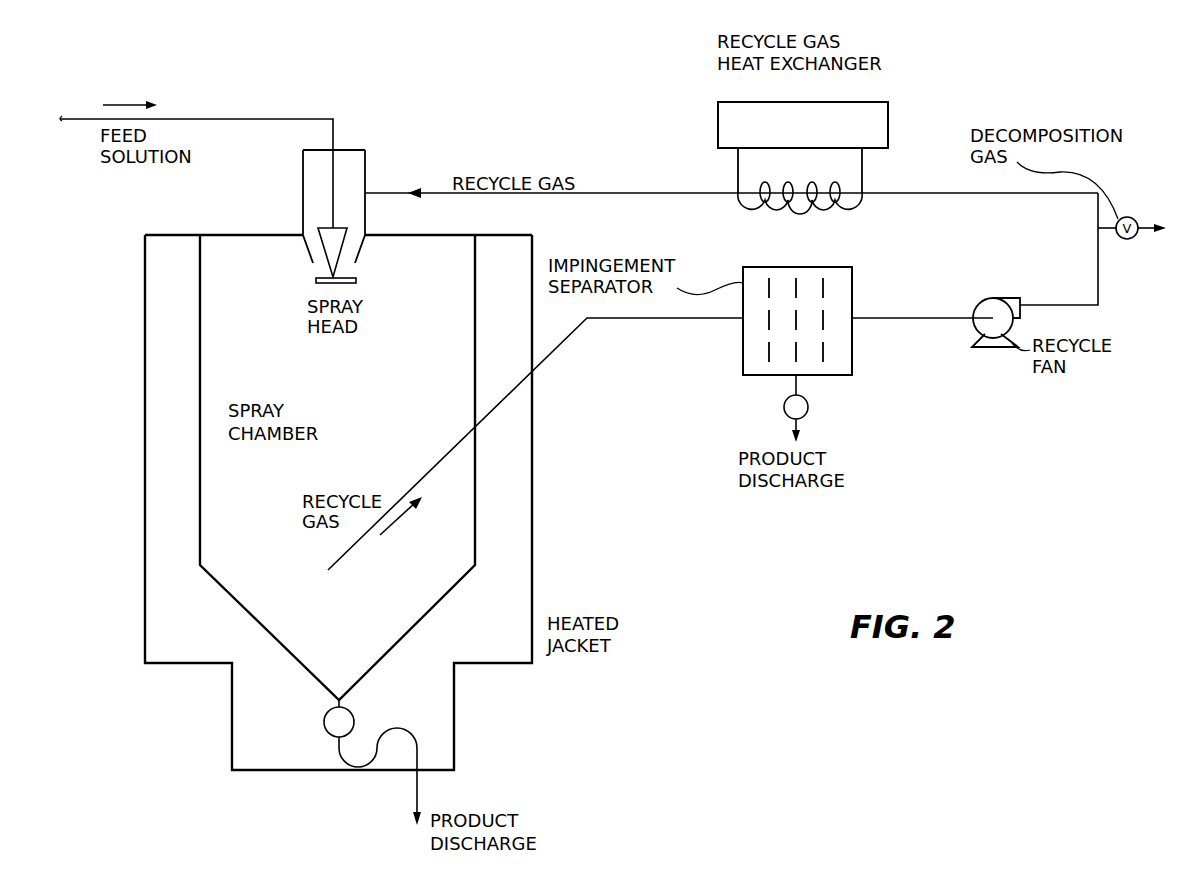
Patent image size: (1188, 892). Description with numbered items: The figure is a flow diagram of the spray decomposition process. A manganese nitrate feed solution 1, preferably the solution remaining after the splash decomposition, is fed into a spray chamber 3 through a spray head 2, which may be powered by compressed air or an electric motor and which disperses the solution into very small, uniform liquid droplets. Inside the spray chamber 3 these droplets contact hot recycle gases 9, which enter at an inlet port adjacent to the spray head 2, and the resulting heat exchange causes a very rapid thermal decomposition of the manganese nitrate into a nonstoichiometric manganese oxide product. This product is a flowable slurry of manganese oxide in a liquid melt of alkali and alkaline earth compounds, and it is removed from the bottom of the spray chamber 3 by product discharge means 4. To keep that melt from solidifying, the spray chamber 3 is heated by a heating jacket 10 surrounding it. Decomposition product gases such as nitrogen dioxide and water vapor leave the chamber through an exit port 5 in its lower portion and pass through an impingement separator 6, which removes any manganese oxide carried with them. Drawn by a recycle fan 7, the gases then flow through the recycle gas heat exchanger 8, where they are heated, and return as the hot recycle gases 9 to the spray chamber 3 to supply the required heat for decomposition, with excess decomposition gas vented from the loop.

The feed solution line 1 is at (213, 119).
The spray head 2 is at (313, 284).
The spray chamber 3 is at (363, 444).
The product discharge means 4 is at (418, 756).
The exit port 5 is at (373, 528).
The impingement separator 6 is at (852, 312).
The recycle fan 7 is at (978, 311).
The recycle gas heat exchanger 8 is at (788, 118).
The recycle gases 9 is at (619, 193).
The heating jacket 10 is at (500, 636).